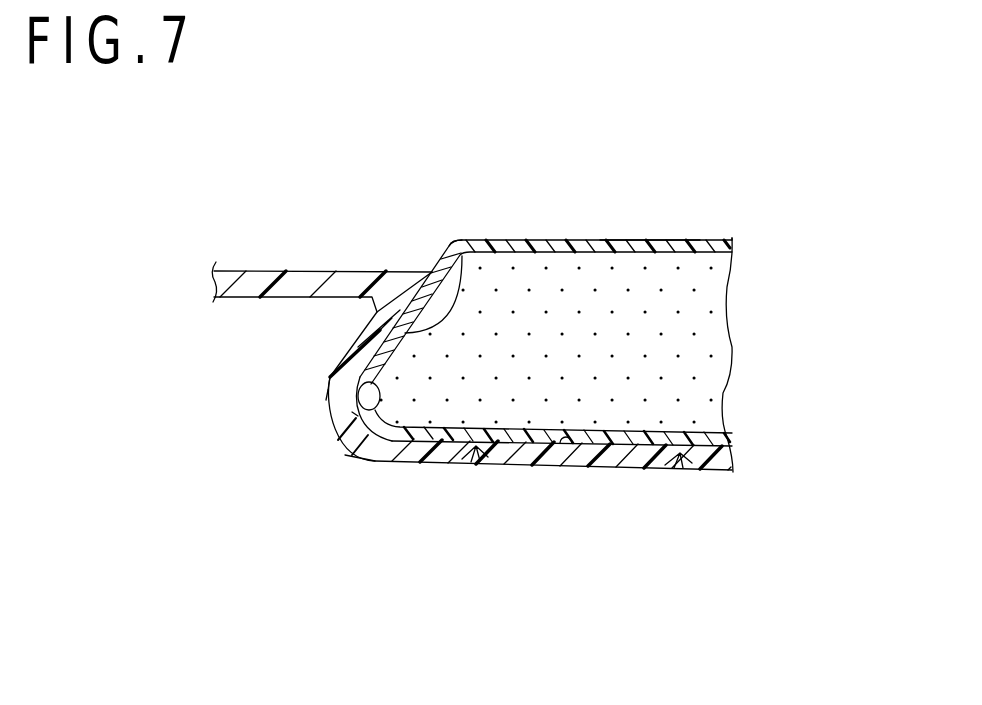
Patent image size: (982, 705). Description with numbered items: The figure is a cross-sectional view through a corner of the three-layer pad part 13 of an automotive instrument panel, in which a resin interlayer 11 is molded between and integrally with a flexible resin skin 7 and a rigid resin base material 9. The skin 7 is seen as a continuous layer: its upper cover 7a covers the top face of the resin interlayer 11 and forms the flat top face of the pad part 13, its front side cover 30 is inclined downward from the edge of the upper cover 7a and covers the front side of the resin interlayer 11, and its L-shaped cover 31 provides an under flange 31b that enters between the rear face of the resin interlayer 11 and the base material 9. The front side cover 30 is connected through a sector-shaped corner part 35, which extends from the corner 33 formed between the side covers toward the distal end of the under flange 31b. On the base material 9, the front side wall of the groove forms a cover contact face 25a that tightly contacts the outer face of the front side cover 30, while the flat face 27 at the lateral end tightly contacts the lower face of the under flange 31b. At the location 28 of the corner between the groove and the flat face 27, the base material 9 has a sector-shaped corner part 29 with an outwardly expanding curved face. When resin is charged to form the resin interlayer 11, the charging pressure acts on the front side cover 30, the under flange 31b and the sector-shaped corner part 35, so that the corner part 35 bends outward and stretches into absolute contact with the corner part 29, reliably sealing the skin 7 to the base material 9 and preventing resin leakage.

The skin 7 is at (636, 241).
The upper cover 7a is at (533, 241).
The base material 9 is at (272, 270).
The resin interlayer 11 is at (630, 373).
The pad part 13 is at (755, 477).
The cover contact face 25a is at (457, 241).
The flat face 27 is at (580, 441).
The location of corner 28 is at (333, 417).
The sector-shaped corner part 29 is at (330, 381).
The front side cover 30 is at (372, 333).
The L-shaped cover 31 is at (680, 453).
The under flange 31b is at (476, 446).
The corner 33 is at (357, 418).
The sector-shaped corner part 35 is at (363, 460).